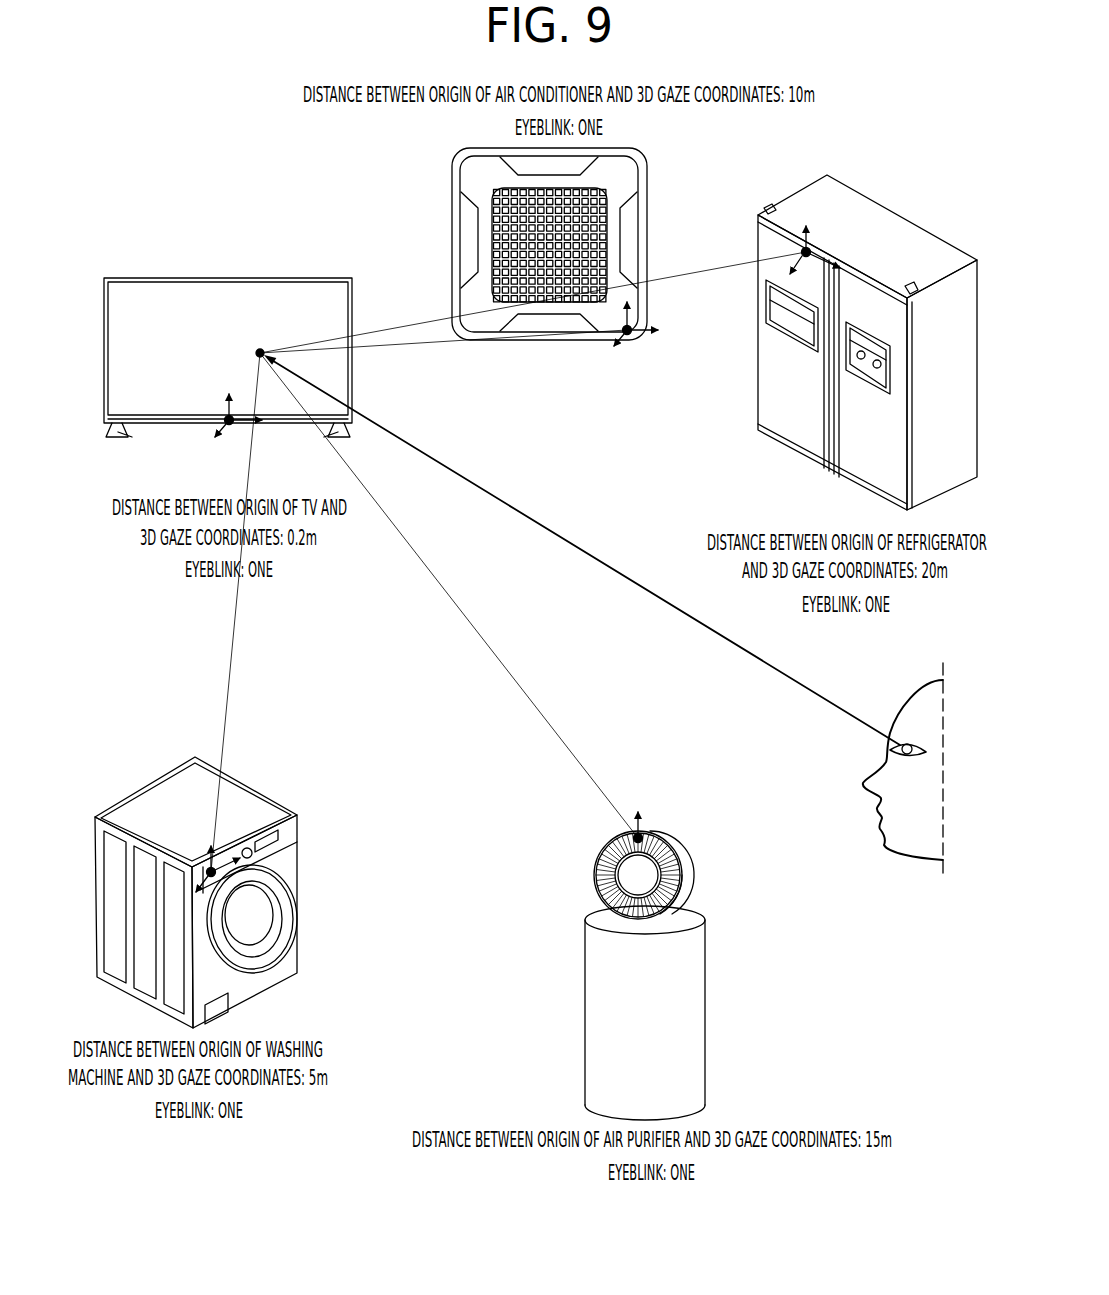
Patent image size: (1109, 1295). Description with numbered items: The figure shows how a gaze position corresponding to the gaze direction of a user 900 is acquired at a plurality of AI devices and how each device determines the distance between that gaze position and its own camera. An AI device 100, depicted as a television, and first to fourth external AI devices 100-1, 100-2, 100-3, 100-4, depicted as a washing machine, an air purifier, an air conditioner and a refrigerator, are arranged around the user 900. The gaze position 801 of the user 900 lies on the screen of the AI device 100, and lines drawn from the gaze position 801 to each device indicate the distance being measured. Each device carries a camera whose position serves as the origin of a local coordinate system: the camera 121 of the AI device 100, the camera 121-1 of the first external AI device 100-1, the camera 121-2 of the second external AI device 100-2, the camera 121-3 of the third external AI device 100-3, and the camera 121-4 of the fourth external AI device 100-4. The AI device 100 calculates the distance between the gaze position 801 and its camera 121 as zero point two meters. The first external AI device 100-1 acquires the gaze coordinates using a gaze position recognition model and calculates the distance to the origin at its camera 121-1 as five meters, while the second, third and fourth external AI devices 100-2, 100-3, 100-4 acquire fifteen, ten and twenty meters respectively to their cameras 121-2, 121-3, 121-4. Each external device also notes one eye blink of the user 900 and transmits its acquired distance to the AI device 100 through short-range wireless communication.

The AI device 100 is at (162, 278).
The gaze position 801 is at (260, 350).
The camera 121 is at (230, 426).
The first external AI device 100-1 is at (251, 803).
The camera 121-1 is at (208, 868).
The second external AI device 100-2 is at (595, 960).
The camera 121-2 is at (630, 836).
The third external AI device 100-3 is at (468, 175).
The camera 121-3 is at (632, 338).
The fourth external AI device 100-4 is at (915, 245).
The camera 121-4 is at (802, 250).
The user 900 is at (906, 842).